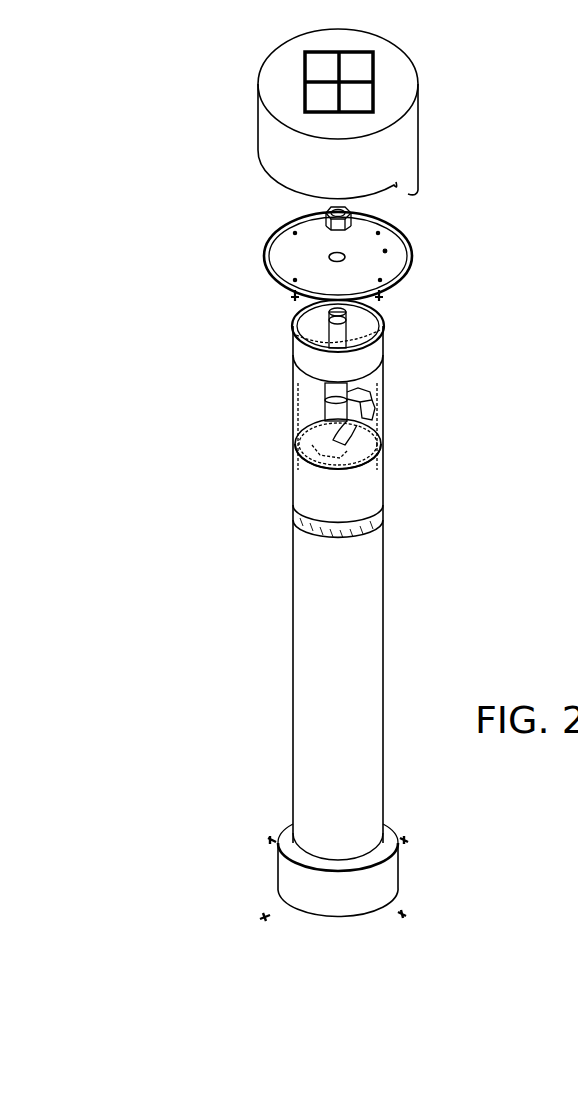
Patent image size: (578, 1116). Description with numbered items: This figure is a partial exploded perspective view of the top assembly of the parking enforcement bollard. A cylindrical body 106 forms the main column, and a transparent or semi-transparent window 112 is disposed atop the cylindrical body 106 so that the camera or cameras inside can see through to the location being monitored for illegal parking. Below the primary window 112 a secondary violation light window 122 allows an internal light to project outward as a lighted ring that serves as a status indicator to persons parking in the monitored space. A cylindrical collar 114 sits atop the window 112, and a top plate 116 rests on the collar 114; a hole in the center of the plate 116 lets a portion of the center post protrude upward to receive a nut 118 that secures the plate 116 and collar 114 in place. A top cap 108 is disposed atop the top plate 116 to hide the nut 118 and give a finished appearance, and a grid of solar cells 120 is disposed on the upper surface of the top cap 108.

The cylindrical body 106 is at (386, 568).
The cap 108 is at (452, 99).
The window 112 is at (386, 408).
The cylindrical collar 114 is at (386, 345).
The top plate 116 is at (413, 250).
The nut 118 is at (328, 212).
The grid of solar cells 120 is at (305, 63).
The violation light window 122 is at (386, 510).